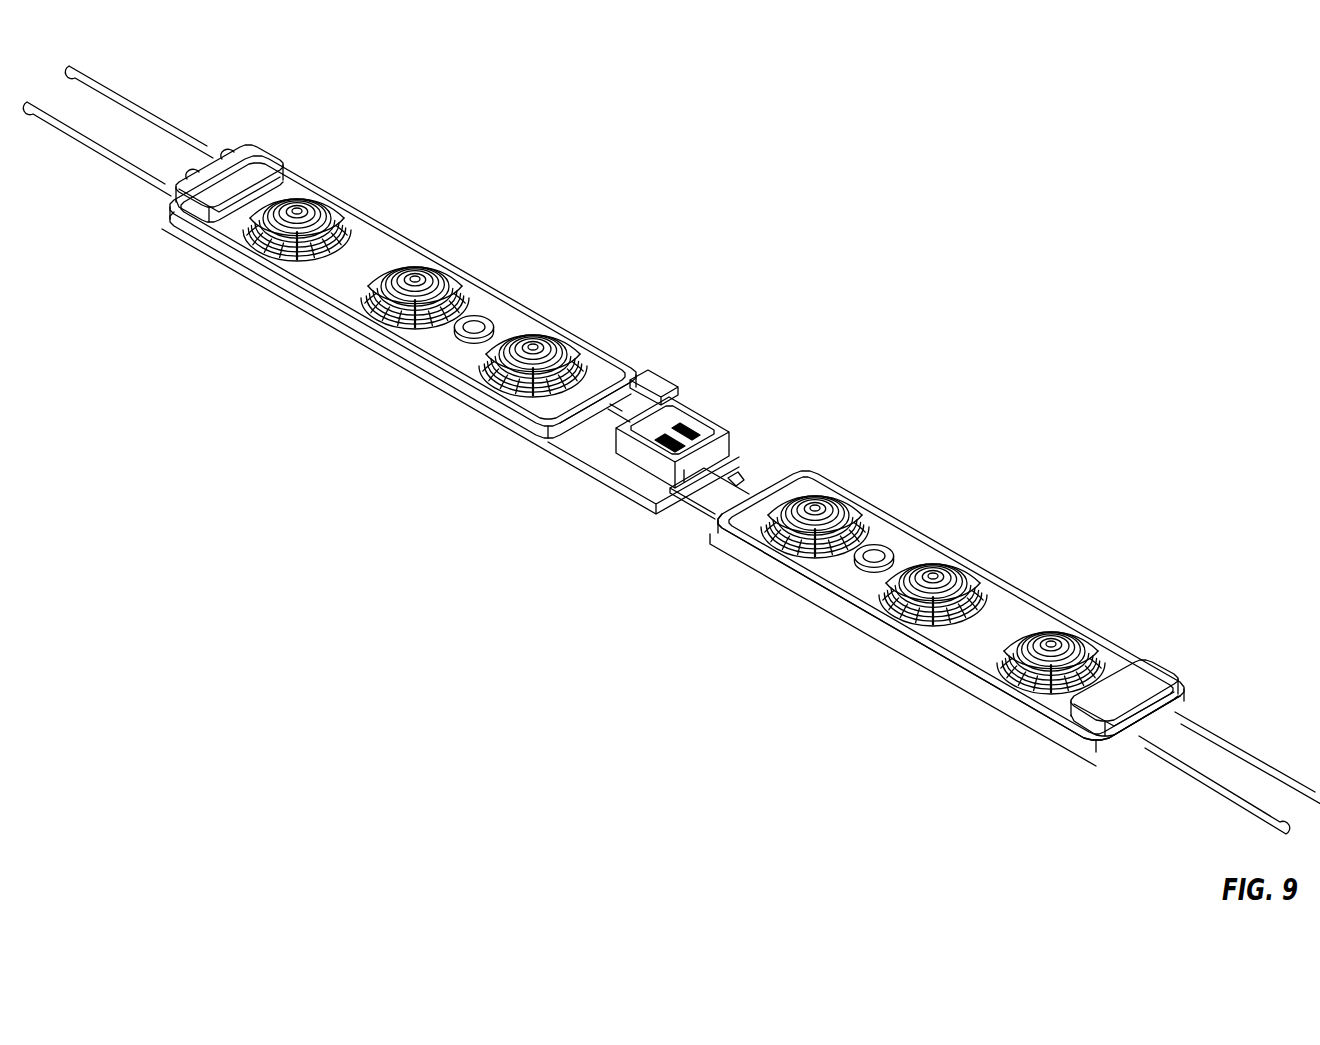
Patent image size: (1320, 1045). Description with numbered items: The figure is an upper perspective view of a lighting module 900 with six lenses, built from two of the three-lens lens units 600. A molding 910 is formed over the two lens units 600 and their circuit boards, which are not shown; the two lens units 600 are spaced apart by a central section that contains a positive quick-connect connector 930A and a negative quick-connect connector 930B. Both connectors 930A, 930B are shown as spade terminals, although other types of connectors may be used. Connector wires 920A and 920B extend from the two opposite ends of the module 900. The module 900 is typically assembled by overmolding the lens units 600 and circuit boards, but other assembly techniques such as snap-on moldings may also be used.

The lighting module 900 is at (671, 450).
The lens unit 600 is at (360, 248).
The molding 910 is at (247, 172).
The connector wire 920A is at (1207, 735).
The connector wire 920B is at (192, 152).
The positive quick-connect connector 930A is at (700, 503).
The negative quick-connect connector 930B is at (647, 412).